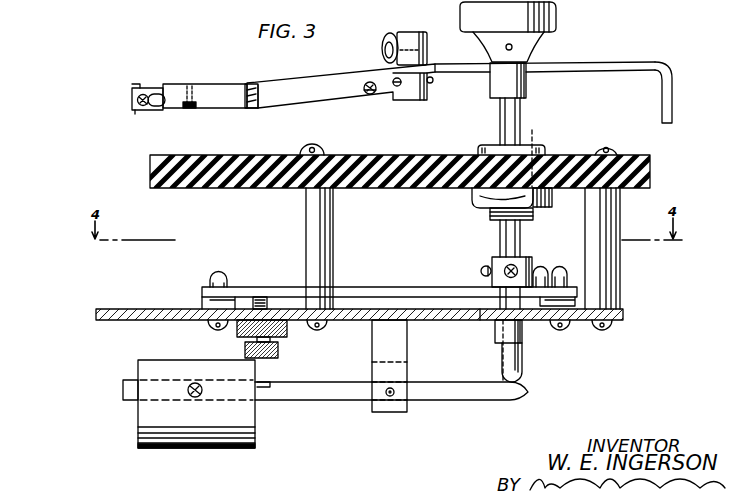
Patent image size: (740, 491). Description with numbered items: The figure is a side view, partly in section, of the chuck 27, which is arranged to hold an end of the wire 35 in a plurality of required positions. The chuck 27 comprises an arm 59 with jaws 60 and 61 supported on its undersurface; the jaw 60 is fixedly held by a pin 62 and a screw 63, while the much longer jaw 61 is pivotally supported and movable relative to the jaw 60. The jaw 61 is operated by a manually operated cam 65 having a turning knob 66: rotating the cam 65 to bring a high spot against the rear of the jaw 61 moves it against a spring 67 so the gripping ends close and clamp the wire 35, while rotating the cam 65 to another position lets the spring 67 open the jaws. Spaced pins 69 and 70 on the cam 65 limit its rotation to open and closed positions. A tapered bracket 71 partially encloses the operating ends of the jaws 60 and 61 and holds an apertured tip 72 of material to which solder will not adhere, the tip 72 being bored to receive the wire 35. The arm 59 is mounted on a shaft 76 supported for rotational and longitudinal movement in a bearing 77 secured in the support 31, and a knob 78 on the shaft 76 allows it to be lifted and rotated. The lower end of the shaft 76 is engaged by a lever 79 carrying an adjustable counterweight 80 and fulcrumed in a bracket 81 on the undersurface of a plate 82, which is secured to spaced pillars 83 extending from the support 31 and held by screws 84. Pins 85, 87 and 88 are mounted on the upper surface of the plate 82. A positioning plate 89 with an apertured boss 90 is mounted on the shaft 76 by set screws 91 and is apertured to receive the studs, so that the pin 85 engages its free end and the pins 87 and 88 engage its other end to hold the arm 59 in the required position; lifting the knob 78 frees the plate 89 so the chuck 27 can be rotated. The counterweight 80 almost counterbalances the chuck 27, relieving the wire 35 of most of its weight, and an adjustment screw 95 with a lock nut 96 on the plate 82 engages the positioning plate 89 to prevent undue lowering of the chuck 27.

The chuck 27 is at (606, 61).
The support 31 is at (651, 170).
The wire 35 is at (135, 88).
The arm 59 is at (438, 66).
The jaw 60 is at (219, 95).
The jaw 61 is at (291, 92).
The pin 62 is at (190, 85).
The screw 63 is at (248, 84).
The cam 65 is at (427, 88).
The turning knob 66 is at (416, 32).
The spring 67 is at (382, 96).
The pin 69 is at (434, 81).
The pin 70 is at (400, 88).
The tapered bracket 71 is at (131, 99).
The apertured tip 72 is at (136, 111).
The shaft 76 is at (519, 119).
The bearing 77 is at (540, 149).
The knob 78 is at (558, 20).
The lever 79 is at (524, 396).
The adjustable counterweight 80 is at (256, 430).
The bracket 81 is at (408, 346).
The plate 82 is at (478, 318).
The pillars 83 is at (300, 267).
The screws 84 is at (313, 151).
The pin 85 is at (224, 280).
The pin 87 is at (542, 265).
The pin 88 is at (560, 274).
The positioning plate 89 is at (353, 288).
The apertured boss 90 is at (496, 262).
The set screws 91 is at (482, 270).
The adjustment screw 95 is at (270, 352).
The lock nut 96 is at (284, 331).